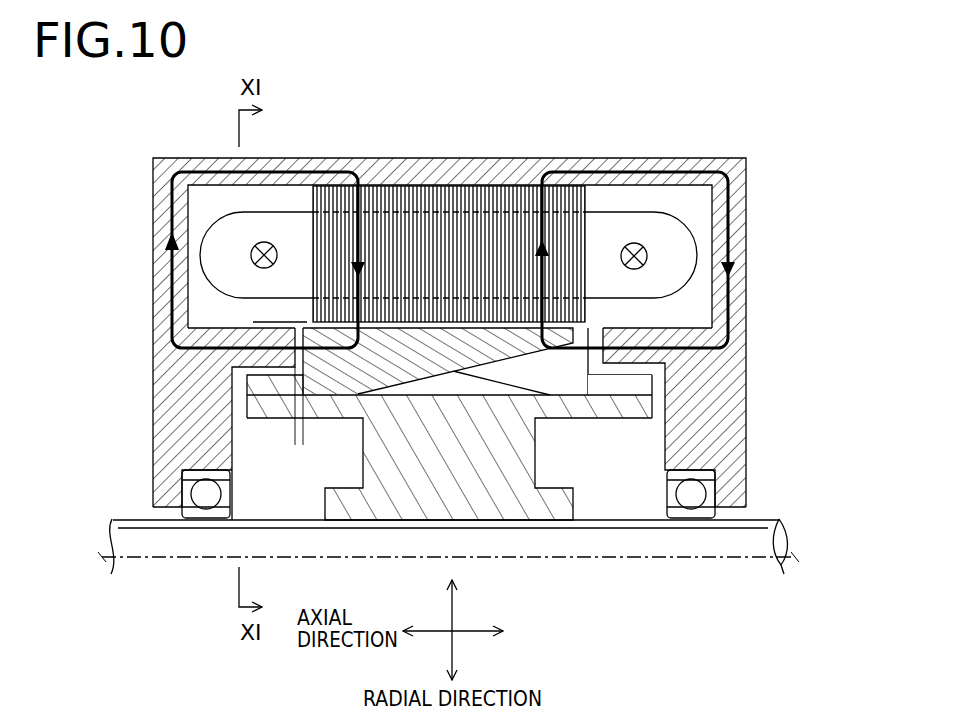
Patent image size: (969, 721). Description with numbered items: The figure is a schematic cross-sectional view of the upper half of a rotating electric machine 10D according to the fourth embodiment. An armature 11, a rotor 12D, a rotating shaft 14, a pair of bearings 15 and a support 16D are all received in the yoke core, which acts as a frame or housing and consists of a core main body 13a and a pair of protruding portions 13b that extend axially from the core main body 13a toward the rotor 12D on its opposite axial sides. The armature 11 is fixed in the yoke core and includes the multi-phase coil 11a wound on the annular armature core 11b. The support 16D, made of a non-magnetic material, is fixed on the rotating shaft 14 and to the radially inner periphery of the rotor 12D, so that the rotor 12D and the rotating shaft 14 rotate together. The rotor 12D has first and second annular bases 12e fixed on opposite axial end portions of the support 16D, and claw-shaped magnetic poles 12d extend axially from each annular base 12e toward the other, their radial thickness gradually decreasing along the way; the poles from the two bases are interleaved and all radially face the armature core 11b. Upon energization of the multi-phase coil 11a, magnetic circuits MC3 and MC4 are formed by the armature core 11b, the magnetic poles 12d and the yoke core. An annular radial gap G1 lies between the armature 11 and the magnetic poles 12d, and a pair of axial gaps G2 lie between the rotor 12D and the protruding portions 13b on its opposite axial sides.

The rotating electric machine 10D is at (202, 142).
The armature 11 is at (450, 106).
The multi-phase coil 11a is at (283, 228).
The armature core 11b is at (418, 257).
The rotor 12D is at (612, 106).
The claw-shaped magnetic poles 12d is at (455, 352).
The annular bases 12e is at (620, 383).
The core main body 13a is at (747, 180).
The protruding portions 13b is at (250, 353).
The rotating shaft 14 is at (152, 543).
The bearings 15 is at (204, 500).
The support 16D is at (478, 468).
The magnetic circuit MC3 is at (153, 232).
The magnetic circuit MC4 is at (747, 257).
The annular radial gap G1 is at (265, 285).
The axial gaps G2 is at (338, 433).